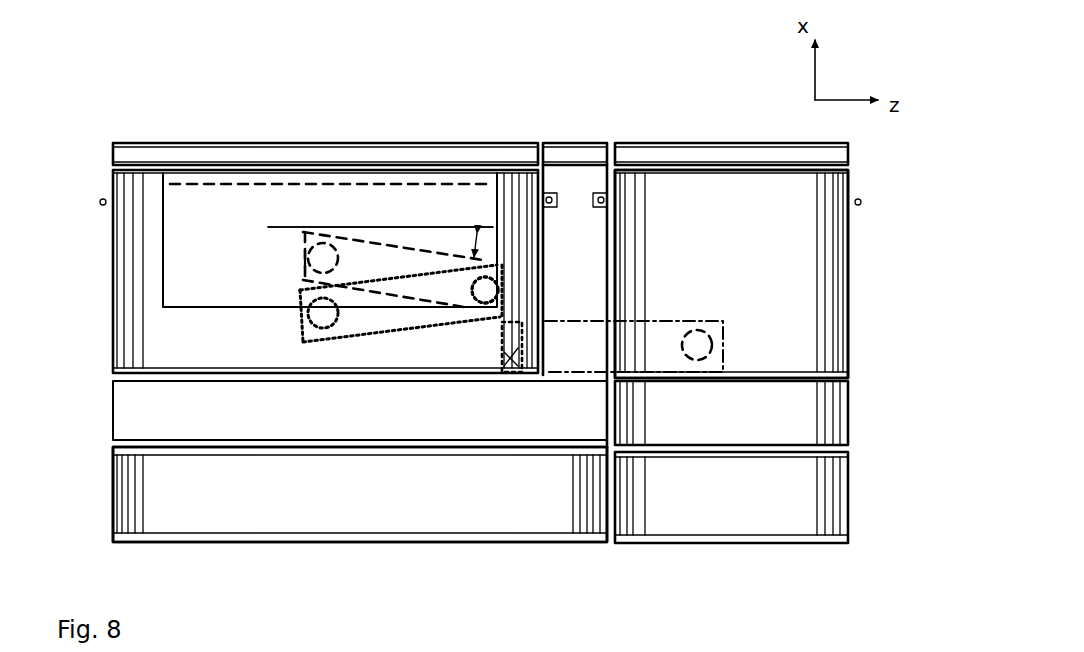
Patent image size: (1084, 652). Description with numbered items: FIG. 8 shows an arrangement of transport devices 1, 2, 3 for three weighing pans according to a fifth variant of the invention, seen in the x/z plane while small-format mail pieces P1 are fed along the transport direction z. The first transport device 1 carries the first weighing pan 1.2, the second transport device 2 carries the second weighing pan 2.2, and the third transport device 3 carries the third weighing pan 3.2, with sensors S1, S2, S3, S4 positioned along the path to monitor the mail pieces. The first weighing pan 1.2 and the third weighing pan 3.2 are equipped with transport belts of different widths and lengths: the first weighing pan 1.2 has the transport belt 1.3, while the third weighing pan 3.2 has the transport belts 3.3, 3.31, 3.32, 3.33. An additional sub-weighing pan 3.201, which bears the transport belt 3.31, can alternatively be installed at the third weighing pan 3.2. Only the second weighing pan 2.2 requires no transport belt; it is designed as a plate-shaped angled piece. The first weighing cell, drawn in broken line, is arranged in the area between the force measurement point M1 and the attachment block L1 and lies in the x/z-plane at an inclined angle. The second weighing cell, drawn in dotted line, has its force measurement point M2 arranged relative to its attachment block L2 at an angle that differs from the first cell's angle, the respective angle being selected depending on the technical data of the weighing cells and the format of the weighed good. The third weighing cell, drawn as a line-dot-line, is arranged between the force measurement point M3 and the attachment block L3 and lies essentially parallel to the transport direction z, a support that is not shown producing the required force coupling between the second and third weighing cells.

The first transport device 1 is at (150, 104).
The first weighing pan 1.2 is at (453, 151).
The transport belt 1.3 is at (200, 338).
The small-format mail piece P1 is at (345, 208).
The force measurement point M1 is at (313, 258).
The force measurement point M2 is at (540, 442).
The force measurement point M3 is at (528, 326).
The attachment block L1 is at (473, 292).
The attachment block L2 is at (325, 315).
The attachment block L3 is at (700, 345).
The sub-weighing pan 3.201 is at (382, 417).
The sensor S1 is at (103, 196).
The sensor S2 is at (545, 200).
The sensor S3 is at (606, 200).
The sensor S4 is at (860, 207).
The transport belt 3.31 is at (185, 500).
The second transport device 2 is at (588, 105).
The second weighing pan 2.2 is at (583, 151).
The third transport device 3 is at (680, 102).
The third weighing pan 3.2 is at (705, 152).
The transport belt 3.3 is at (758, 202).
The transport belt 3.32 is at (670, 505).
The transport belt 3.33 is at (713, 422).